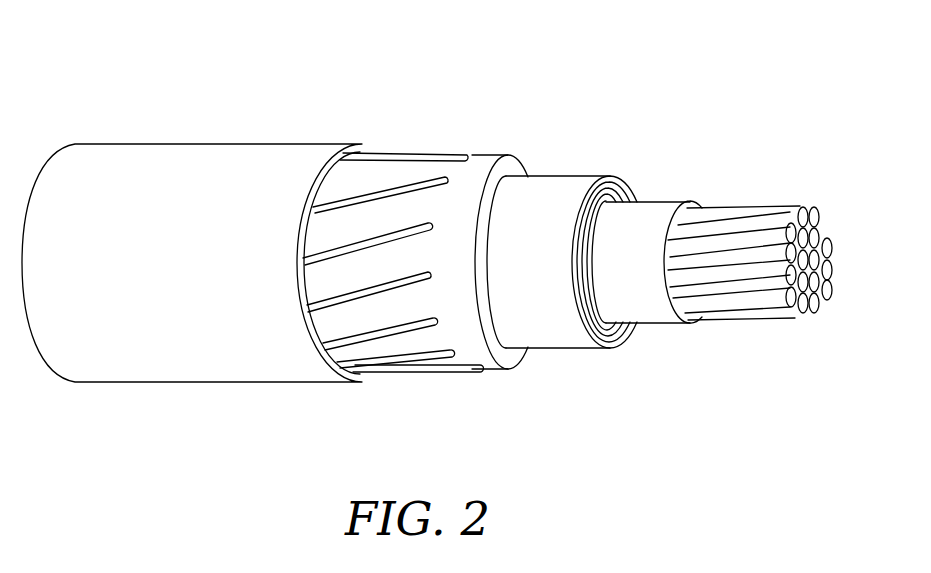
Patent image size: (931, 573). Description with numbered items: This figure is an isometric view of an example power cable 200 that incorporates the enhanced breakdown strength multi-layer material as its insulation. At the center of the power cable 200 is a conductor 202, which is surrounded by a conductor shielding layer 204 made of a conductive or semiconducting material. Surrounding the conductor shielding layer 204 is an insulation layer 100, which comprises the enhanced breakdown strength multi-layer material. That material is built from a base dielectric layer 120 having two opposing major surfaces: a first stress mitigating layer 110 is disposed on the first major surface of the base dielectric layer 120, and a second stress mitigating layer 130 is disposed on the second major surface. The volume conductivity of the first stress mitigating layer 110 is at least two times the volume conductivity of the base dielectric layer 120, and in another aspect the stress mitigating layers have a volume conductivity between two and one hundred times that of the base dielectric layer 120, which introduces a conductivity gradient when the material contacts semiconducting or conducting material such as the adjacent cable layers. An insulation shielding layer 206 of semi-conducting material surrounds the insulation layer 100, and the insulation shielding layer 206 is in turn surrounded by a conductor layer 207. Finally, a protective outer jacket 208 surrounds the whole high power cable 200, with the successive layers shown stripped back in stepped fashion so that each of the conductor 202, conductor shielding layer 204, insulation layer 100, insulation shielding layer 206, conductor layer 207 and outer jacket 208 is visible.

The power cable 200 is at (724, 41).
The insulation layer 100 is at (616, 214).
The first stress mitigating layer 110 is at (610, 199).
The base dielectric layer 120 is at (625, 197).
The second stress mitigating layer 130 is at (613, 190).
The conductor 202 is at (823, 230).
The conductor shielding layer 204 is at (662, 330).
The insulation shielding layer 206 is at (498, 368).
The conductor layer 207 is at (408, 355).
The protective outer jacket 208 is at (192, 383).